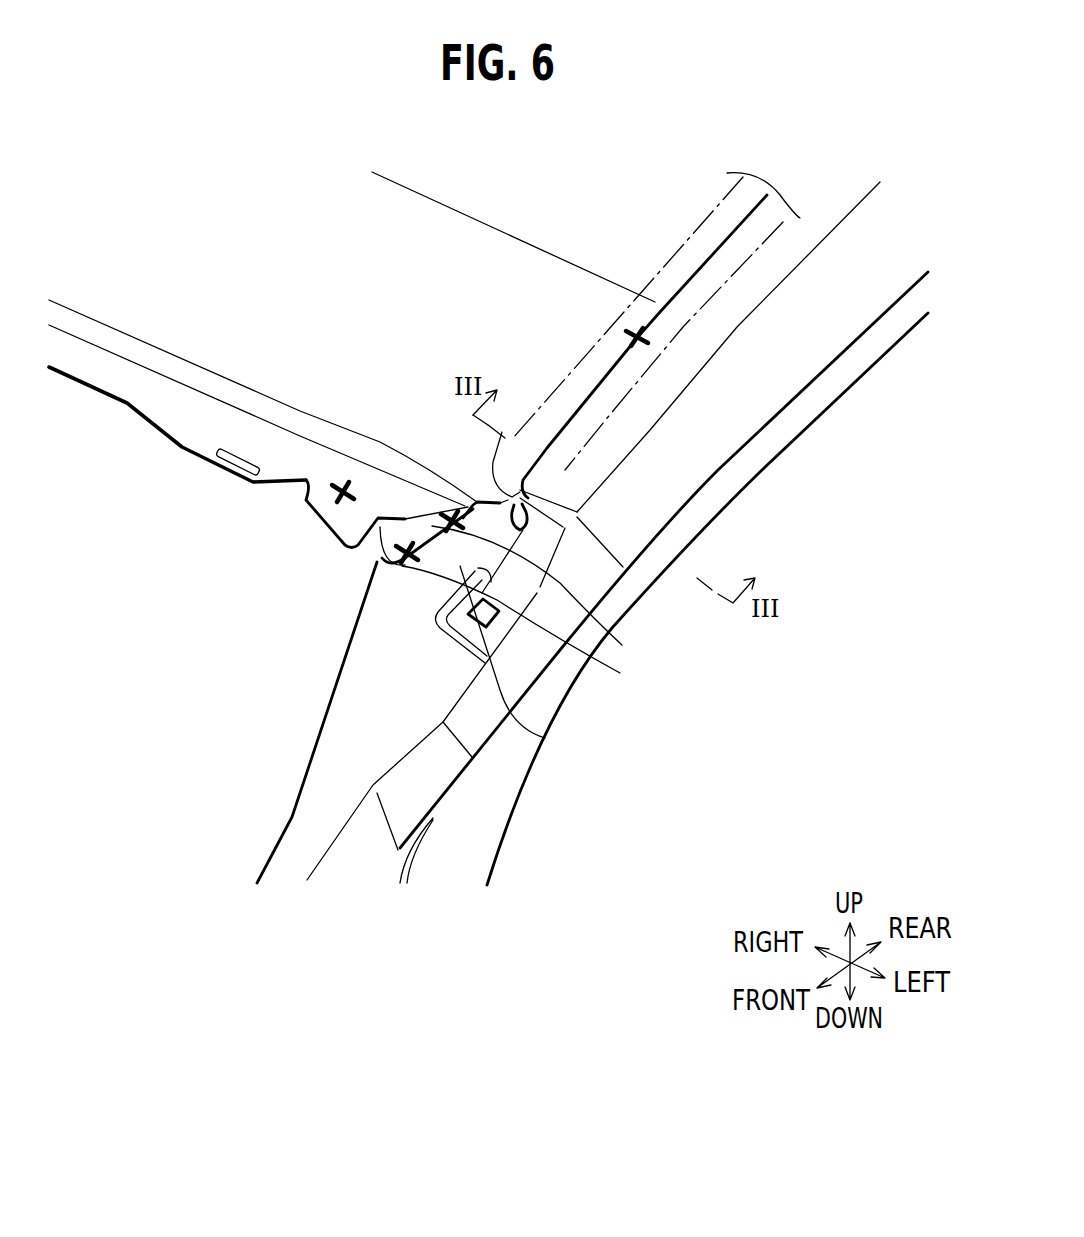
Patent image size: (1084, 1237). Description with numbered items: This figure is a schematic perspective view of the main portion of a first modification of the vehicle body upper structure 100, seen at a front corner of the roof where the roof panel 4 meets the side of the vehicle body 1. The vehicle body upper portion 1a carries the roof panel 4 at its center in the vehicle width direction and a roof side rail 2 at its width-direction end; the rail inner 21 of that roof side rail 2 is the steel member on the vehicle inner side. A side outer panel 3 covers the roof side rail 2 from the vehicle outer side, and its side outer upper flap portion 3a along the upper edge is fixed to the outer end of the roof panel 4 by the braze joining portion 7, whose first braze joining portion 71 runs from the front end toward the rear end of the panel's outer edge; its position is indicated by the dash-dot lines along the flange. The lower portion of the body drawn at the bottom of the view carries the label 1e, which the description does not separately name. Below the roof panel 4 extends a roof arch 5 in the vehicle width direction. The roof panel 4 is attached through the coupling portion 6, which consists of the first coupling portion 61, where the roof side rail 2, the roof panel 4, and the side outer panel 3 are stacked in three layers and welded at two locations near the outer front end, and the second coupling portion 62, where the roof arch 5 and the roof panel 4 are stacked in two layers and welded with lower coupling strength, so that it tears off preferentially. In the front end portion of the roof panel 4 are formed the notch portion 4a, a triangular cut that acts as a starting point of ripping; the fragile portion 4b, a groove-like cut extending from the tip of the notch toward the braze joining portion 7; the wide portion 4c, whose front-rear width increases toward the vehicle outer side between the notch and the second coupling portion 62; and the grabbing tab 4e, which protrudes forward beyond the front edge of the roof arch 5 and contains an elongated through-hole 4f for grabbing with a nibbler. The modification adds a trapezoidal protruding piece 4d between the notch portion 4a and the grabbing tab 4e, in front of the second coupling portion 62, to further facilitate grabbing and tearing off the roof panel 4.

The vehicle body upper structure 100 is at (298, 272).
The vehicle body 1 is at (832, 438).
The vehicle body upper portion 1a is at (565, 330).
The pillar edge 1e is at (305, 765).
The roof side rail 2 is at (707, 599).
The rail inner 21 is at (750, 460).
The side outer panel 3 is at (664, 552).
The side outer upper flap portion 3a is at (727, 220).
The roof panel 4 is at (416, 530).
The notch portion 4a is at (620, 673).
The fragile portion 4b is at (430, 505).
The wide portion 4c is at (368, 528).
The protruding piece 4d is at (325, 525).
The grabbing tab 4e is at (183, 447).
The through-hole 4f is at (212, 465).
The roof arch 5 is at (278, 487).
The coupling portion 6 is at (244, 523).
The first coupling portion 61 is at (612, 628).
The second coupling portion 62 is at (303, 497).
The braze joining portion 7 is at (672, 154).
The first braze joining portion 71 is at (697, 205).